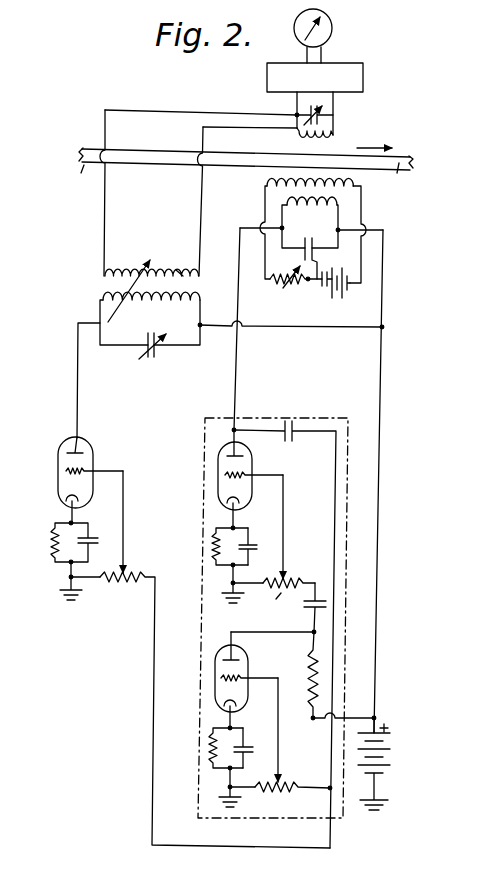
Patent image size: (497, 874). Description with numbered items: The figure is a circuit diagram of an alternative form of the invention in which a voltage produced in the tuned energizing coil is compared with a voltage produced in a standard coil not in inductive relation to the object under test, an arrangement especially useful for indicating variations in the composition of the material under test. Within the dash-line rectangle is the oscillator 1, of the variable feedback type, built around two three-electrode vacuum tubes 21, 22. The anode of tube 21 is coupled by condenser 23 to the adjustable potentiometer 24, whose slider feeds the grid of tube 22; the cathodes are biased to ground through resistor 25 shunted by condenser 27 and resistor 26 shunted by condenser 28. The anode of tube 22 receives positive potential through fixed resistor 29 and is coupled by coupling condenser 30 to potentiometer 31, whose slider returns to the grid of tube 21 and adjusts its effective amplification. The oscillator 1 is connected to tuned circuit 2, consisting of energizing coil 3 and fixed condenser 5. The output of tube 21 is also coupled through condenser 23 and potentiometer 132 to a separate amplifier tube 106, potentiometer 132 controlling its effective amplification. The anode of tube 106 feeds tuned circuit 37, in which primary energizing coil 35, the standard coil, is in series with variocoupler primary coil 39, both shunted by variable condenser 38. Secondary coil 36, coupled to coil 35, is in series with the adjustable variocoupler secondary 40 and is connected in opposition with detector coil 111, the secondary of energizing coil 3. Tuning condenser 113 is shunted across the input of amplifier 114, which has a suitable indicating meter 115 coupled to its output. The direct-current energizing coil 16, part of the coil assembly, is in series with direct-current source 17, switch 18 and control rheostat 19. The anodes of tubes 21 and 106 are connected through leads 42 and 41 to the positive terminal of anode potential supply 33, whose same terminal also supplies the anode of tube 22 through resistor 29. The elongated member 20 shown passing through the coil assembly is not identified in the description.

The oscillator 1 is at (350, 507).
The tuned circuit 2 is at (310, 226).
The energizing coil 3 is at (338, 208).
The fixed condenser 5 is at (314, 262).
The direct-current energizing coil 16 is at (267, 186).
The direct-current source 17 is at (354, 292).
The switch 18 is at (319, 294).
The control rheostat 19 is at (294, 291).
The transmission line / rails 20 is at (239, 174).
The vacuum tube 21 is at (220, 452).
The vacuum tube 22 is at (249, 663).
The condenser 23 is at (285, 634).
The adjustable potentiometer 24 is at (277, 792).
The resistor 25 is at (215, 544).
The resistor 26 is at (211, 745).
The condenser 27 is at (250, 544).
The condenser 28 is at (250, 750).
The fixed resistor 29 is at (309, 660).
The coupling condenser 30 is at (301, 607).
The potentiometer 31 is at (283, 545).
The anode potential supply 33 is at (392, 736).
The primary energizing coil 35 is at (199, 282).
The secondary coil 36 is at (180, 266).
The tuned circuit 37 is at (150, 322).
The variable condenser 38 is at (154, 350).
The variocoupler primary coil 39 is at (103, 298).
The adjustable variocoupler secondary 40 is at (129, 278).
The lead 41 is at (237, 372).
The lead 42 is at (380, 378).
The amplifier tube 106 is at (63, 447).
The detector coil 111 is at (336, 136).
The tuning condenser 113 is at (307, 110).
The amplifier 114 is at (365, 78).
The indicating meter 115 is at (334, 33).
The potentiometer 132 is at (136, 566).